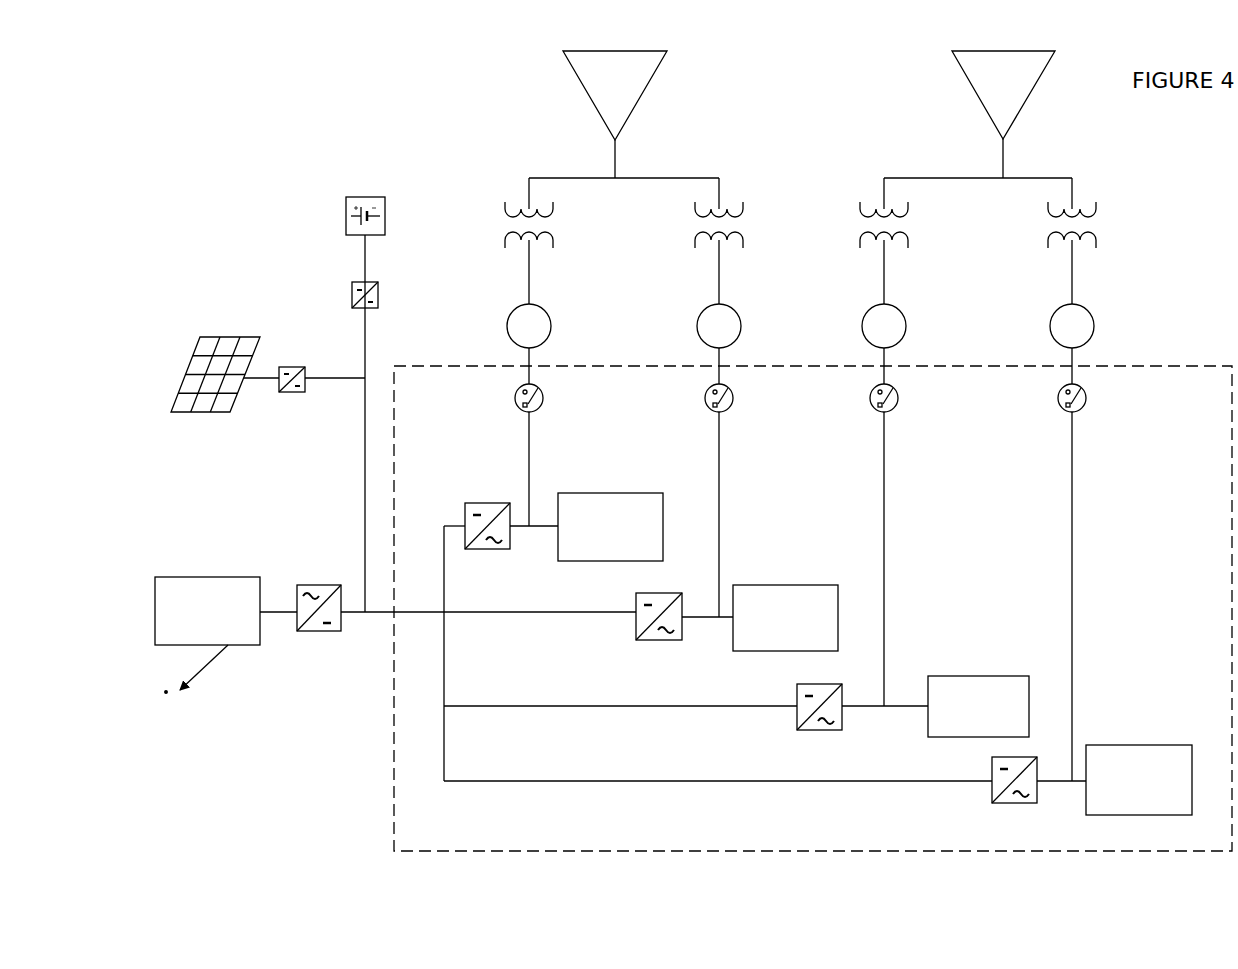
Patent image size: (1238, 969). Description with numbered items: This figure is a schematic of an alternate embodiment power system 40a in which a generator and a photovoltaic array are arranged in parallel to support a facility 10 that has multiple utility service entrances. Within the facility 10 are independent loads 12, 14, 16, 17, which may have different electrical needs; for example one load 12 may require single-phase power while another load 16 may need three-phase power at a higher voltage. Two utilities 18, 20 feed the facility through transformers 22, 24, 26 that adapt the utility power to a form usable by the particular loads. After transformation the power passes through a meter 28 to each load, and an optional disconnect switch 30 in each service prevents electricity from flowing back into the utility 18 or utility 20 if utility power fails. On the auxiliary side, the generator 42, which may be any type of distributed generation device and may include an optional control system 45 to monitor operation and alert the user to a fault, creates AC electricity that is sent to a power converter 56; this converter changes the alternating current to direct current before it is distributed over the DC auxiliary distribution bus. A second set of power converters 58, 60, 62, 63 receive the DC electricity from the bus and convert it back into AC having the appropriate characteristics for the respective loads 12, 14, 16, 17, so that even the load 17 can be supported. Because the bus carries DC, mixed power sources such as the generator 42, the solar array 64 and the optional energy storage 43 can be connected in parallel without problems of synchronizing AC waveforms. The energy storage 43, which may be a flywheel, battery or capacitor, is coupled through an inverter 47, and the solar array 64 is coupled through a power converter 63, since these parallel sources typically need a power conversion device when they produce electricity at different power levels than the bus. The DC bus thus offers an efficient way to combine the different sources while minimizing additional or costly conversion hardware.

The facility 10 is at (986, 851).
The load 12 is at (632, 493).
The load 14 is at (790, 585).
The load 16 is at (985, 676).
The load 17 is at (1150, 745).
The utility 18 is at (632, 112).
The utility 20 is at (978, 105).
The transformer 22 is at (553, 208).
The transformer 24 is at (743, 210).
The transformer 26 is at (908, 243).
The meter 28 is at (549, 318).
The disconnect switch 30 is at (543, 398).
The power system 40a is at (410, 168).
The generator 42 is at (178, 577).
The energy storage 43 is at (346, 228).
The control system 45 is at (483, 610).
The inverter 47 is at (352, 300).
The power converter 56 is at (335, 585).
The power converter 58 is at (497, 503).
The power converter 60 is at (636, 623).
The power converter 62 is at (822, 730).
The power converter 63 is at (992, 790).
The solar array 64 is at (230, 337).